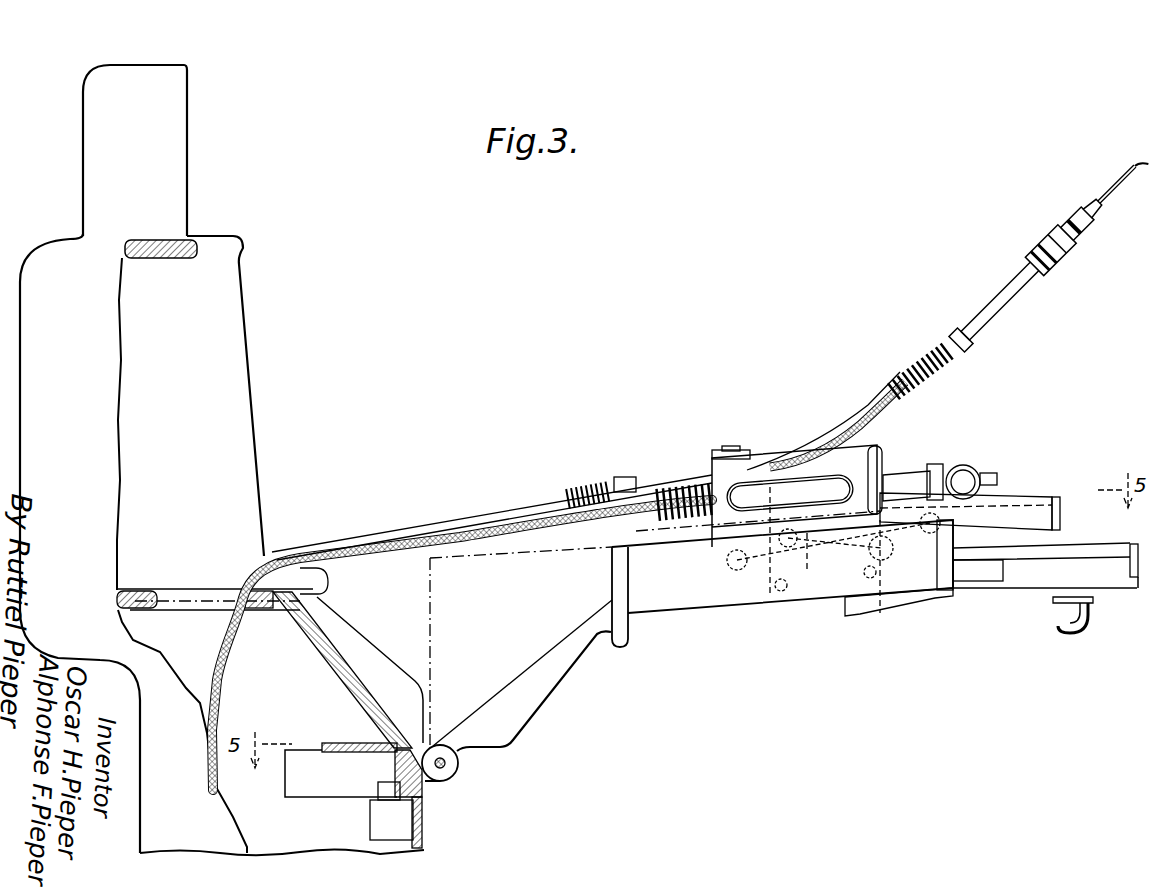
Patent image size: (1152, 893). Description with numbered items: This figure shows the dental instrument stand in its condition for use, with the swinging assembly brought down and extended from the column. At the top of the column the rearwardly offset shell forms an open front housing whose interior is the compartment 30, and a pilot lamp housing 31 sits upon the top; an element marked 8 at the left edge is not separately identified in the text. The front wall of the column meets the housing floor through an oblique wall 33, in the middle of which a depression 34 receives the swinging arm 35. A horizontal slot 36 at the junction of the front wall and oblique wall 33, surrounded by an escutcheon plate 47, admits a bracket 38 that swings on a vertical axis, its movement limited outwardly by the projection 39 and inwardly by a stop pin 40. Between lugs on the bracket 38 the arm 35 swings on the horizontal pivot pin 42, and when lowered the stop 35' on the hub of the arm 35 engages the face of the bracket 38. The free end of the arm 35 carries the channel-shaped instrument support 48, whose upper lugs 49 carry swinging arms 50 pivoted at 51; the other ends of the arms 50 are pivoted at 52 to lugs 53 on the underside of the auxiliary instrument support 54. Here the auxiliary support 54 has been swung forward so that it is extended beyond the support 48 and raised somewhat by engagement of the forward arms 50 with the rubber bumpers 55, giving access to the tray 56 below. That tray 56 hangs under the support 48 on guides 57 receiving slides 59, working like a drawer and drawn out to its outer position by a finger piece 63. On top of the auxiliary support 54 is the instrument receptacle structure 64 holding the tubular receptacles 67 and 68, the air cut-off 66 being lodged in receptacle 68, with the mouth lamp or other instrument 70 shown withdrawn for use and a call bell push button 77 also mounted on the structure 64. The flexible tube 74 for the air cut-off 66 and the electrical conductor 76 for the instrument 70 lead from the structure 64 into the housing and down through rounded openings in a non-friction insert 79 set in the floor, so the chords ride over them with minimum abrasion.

The frame 8 is at (28, 326).
The compartment 30 is at (183, 262).
The pilot lamp housing 31 is at (98, 129).
The oblique wall 33 is at (350, 666).
The depression 34 is at (352, 652).
The swinging arm 35 is at (522, 675).
The stop 35' is at (463, 793).
The horizontal slot 36 is at (422, 801).
The bracket 38 is at (346, 748).
The projection 39 is at (285, 753).
The stop pin 40 is at (380, 790).
The pivot pin 42 is at (452, 766).
The escutcheon plate 47 is at (424, 822).
The instrument support 48 is at (692, 597).
The lugs 49 is at (781, 593).
The swinging arms 50 is at (775, 485).
The pivots 51 is at (725, 553).
The pivots 52 is at (912, 490).
The lugs 53 is at (984, 478).
The auxiliary instrument support 54 is at (1060, 508).
The rubber bumpers 55 is at (905, 565).
The tray 56 is at (1018, 588).
The guides 57 is at (938, 595).
The slides 59 is at (1094, 556).
The finger piece 63 is at (1090, 620).
The instrument receptacle structure 64 is at (733, 462).
The air cut-off 66 is at (935, 472).
The tubular receptacle 67 is at (858, 456).
The tubular receptacle 68 is at (815, 470).
The mouth lamp or other instrument 70 is at (1075, 243).
The flexible tube 74 is at (590, 517).
The electrical conductor 76 is at (875, 412).
The push button 77 is at (722, 452).
The insert 79 is at (146, 596).